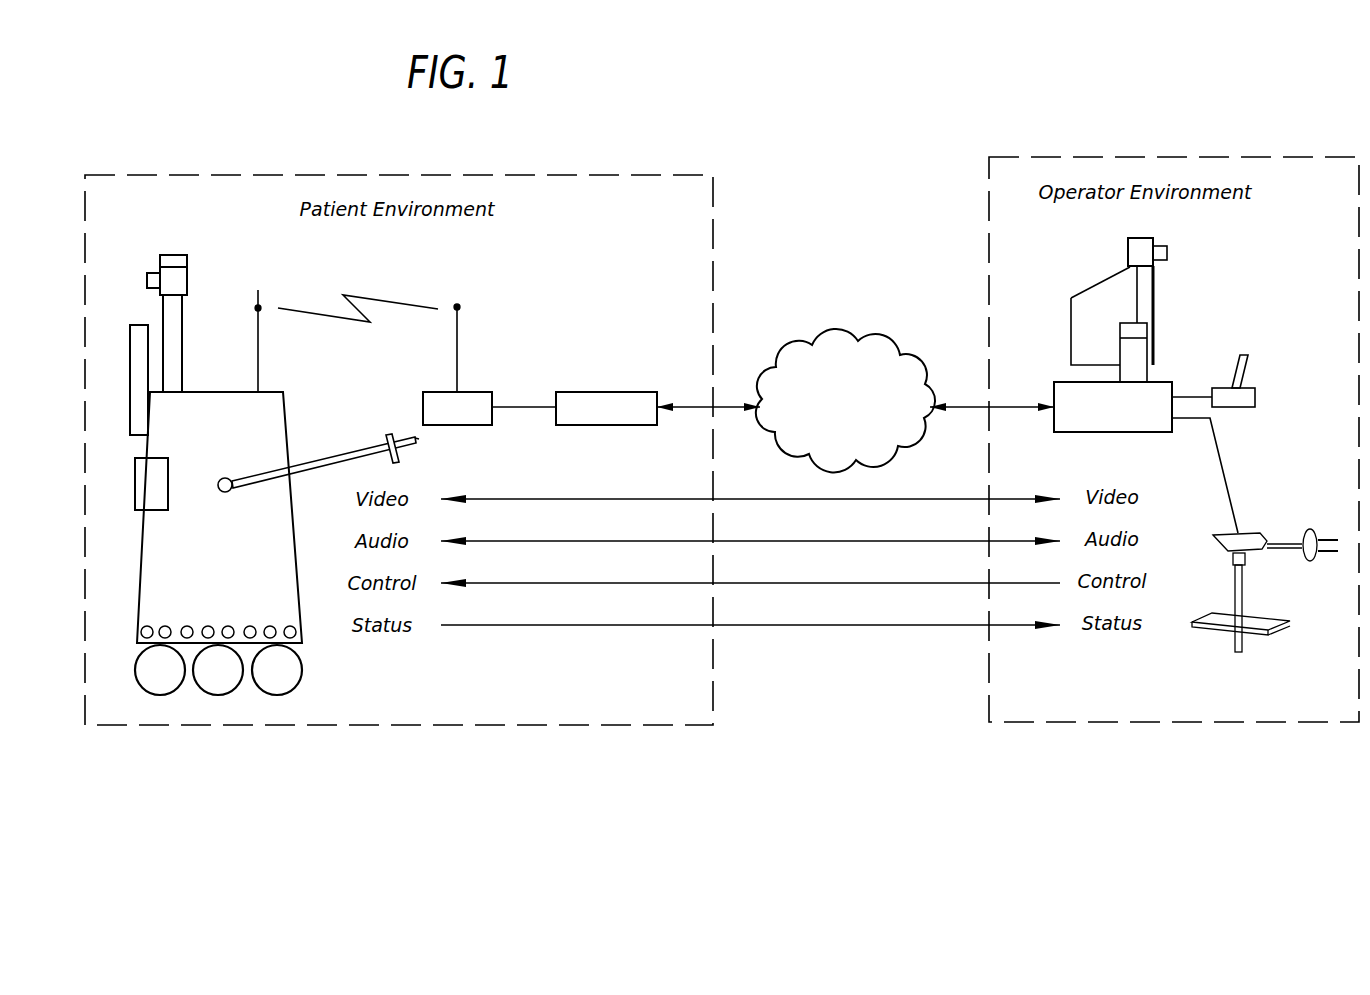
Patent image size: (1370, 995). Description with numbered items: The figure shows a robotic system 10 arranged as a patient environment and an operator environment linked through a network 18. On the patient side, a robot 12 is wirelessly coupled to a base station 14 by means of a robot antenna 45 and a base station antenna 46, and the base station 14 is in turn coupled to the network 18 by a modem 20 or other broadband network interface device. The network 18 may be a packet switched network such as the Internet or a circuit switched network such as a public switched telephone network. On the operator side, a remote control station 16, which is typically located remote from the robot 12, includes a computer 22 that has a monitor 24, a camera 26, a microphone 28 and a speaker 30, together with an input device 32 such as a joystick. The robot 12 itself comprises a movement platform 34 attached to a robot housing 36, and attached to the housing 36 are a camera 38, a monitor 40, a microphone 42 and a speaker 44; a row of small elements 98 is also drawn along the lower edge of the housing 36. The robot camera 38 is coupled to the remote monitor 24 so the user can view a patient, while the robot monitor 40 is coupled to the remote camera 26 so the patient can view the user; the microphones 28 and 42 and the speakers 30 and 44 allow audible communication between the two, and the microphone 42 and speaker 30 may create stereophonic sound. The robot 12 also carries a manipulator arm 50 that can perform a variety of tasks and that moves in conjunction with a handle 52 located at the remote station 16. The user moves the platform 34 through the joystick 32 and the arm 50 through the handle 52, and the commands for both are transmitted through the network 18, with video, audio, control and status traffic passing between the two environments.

The robotic system 10 is at (843, 279).
The robot 12 is at (267, 445).
The base station 14 is at (473, 392).
The remote control station 16 is at (1077, 337).
The network 18 is at (845, 400).
The modem 20 is at (603, 392).
The computer 22 is at (1145, 423).
The monitor 24 is at (1147, 292).
The camera 26 is at (1135, 250).
The microphone 28 is at (1128, 320).
The speaker 30 is at (1142, 372).
The input device 32 is at (1243, 398).
The movement platform 34 is at (282, 678).
The robot housing 36 is at (175, 603).
The camera 38 is at (182, 285).
The monitor 40 is at (138, 367).
The microphone 42 is at (178, 260).
The speaker 44 is at (145, 488).
The antenna 45 is at (258, 292).
The antenna 46 is at (457, 305).
The manipulator arm 50 is at (368, 443).
The handle 52 is at (1280, 662).
The sensors 98 is at (145, 630).